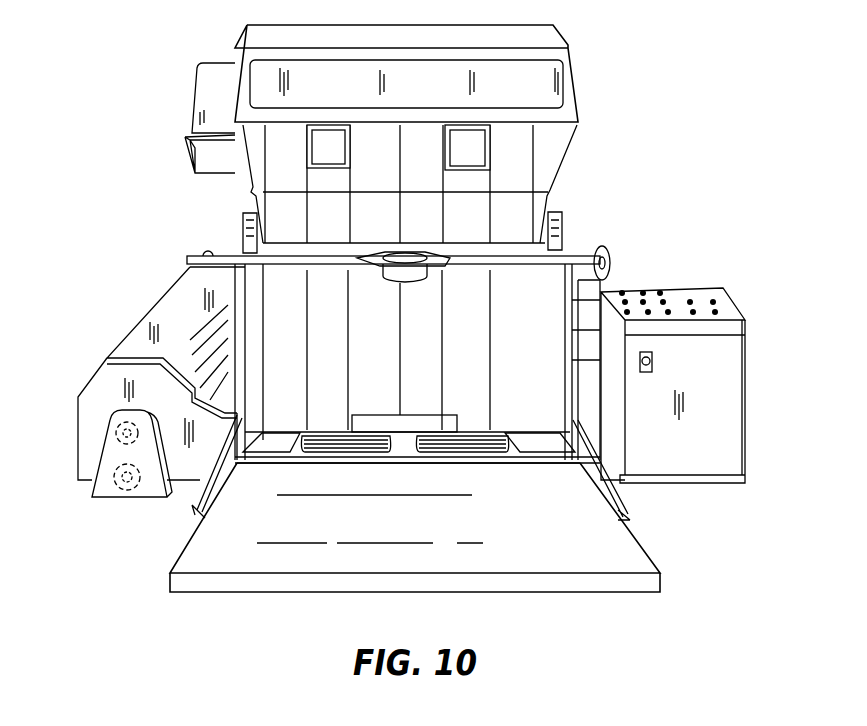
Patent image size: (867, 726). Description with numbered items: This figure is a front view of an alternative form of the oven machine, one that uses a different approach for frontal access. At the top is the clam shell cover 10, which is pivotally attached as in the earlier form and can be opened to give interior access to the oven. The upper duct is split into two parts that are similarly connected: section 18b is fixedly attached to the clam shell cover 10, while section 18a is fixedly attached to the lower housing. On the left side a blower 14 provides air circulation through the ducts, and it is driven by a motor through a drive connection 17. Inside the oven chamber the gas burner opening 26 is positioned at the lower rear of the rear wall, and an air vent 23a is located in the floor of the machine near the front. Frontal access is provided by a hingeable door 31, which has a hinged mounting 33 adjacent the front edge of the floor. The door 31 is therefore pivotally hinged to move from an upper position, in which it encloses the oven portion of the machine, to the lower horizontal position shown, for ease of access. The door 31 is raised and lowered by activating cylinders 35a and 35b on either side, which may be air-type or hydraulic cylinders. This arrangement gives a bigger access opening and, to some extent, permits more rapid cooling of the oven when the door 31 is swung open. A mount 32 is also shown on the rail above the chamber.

The clam shell cover 10 is at (568, 42).
The blower 14 is at (90, 392).
The drive connection 17 is at (97, 453).
The upper duct section 18a is at (158, 300).
The upper duct section 18b is at (198, 74).
The air vent 23a is at (337, 438).
The gas burner opening 26 is at (420, 422).
The hingeable door 31 is at (618, 582).
The mount 32 is at (420, 246).
The hinged mounting 33 is at (523, 464).
The cylinder 35a is at (607, 457).
The cylinder 35b is at (205, 472).